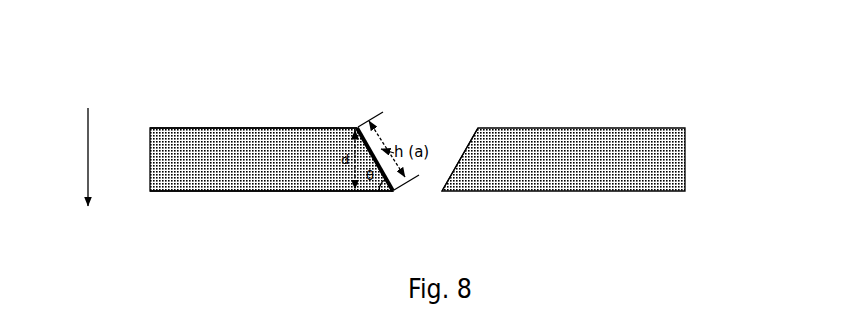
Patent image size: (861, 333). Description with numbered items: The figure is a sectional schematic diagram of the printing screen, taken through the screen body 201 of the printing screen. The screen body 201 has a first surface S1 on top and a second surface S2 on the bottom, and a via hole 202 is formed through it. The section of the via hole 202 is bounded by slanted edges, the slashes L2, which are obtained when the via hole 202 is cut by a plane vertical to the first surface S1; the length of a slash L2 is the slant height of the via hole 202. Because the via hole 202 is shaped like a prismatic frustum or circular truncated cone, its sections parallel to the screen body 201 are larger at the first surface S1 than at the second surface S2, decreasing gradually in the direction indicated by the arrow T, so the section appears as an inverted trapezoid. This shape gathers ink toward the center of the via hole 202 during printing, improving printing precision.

The screen body 201 is at (657, 162).
The via hole 202 is at (418, 128).
The first surface S1 is at (217, 128).
The second surface S2 is at (217, 192).
The slash L2 is at (370, 151).
The arrow T is at (104, 157).